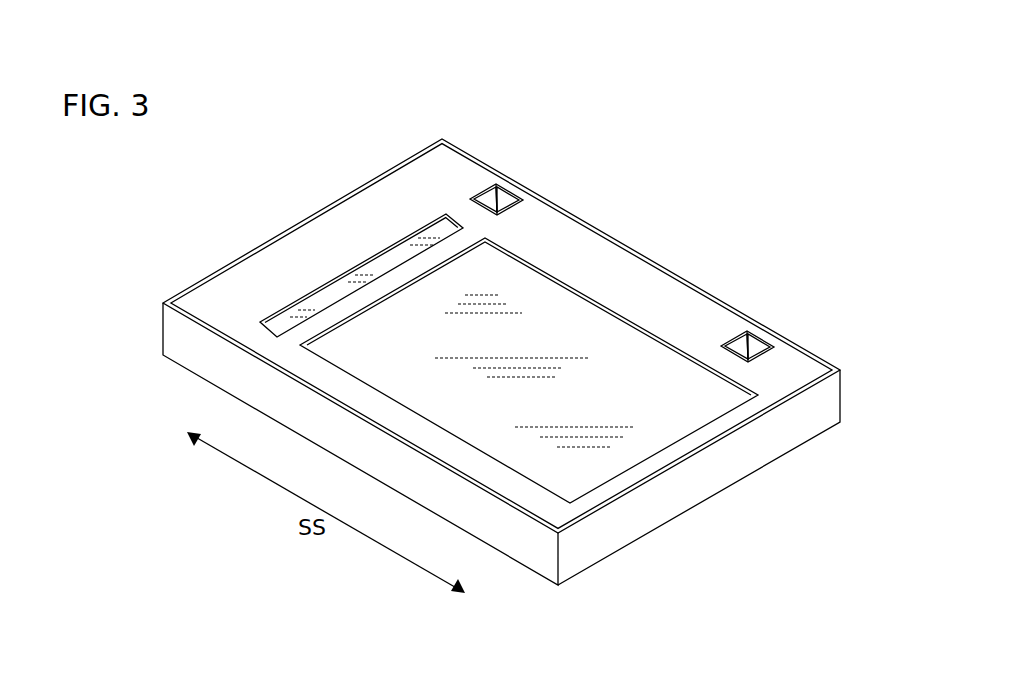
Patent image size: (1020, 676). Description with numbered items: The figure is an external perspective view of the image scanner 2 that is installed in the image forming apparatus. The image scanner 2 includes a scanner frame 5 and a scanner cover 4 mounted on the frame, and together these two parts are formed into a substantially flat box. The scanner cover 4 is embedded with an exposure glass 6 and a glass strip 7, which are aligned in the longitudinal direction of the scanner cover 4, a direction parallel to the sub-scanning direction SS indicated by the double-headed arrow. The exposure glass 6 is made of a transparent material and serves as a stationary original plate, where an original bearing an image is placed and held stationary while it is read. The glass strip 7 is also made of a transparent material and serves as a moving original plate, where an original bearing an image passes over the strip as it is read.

The image scanner 2 is at (612, 165).
The scanner cover 4 is at (672, 287).
The scanner frame 5 is at (713, 482).
The exposure glass 6 is at (552, 297).
The glass strip 7 is at (392, 257).